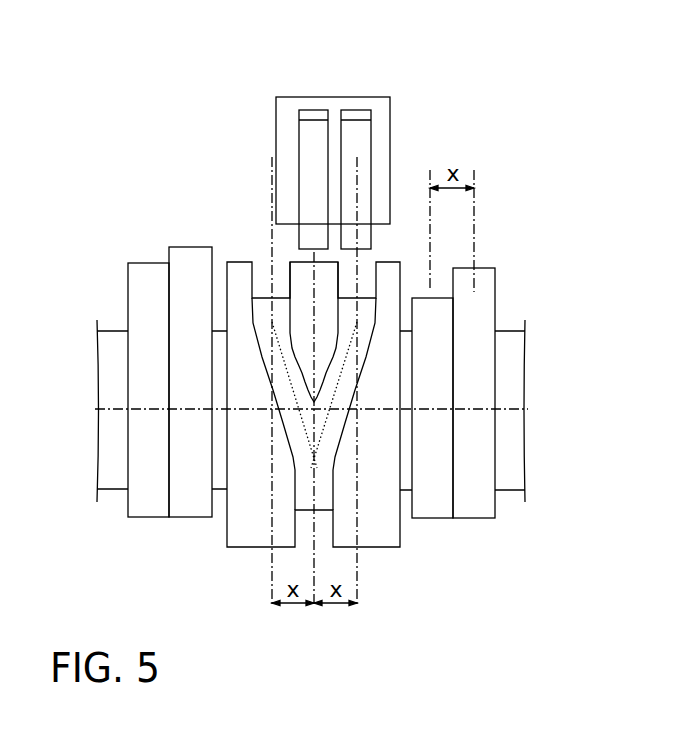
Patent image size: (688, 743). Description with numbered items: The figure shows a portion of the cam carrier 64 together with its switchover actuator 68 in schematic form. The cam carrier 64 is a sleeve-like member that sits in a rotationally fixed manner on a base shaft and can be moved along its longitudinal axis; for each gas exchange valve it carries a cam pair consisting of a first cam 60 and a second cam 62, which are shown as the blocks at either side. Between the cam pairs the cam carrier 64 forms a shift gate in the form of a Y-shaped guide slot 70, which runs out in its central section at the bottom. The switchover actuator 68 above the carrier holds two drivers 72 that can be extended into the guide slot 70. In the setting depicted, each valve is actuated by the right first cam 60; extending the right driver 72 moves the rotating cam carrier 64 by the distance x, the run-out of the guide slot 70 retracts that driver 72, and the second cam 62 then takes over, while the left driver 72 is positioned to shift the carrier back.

The first cam 60 is at (190, 270).
The second cam 62 is at (150, 273).
The cam carrier 64 is at (510, 409).
The switchover actuator 68 is at (275, 96).
The Y-shaped guide slot 70 is at (312, 454).
The drivers 72 is at (357, 137).